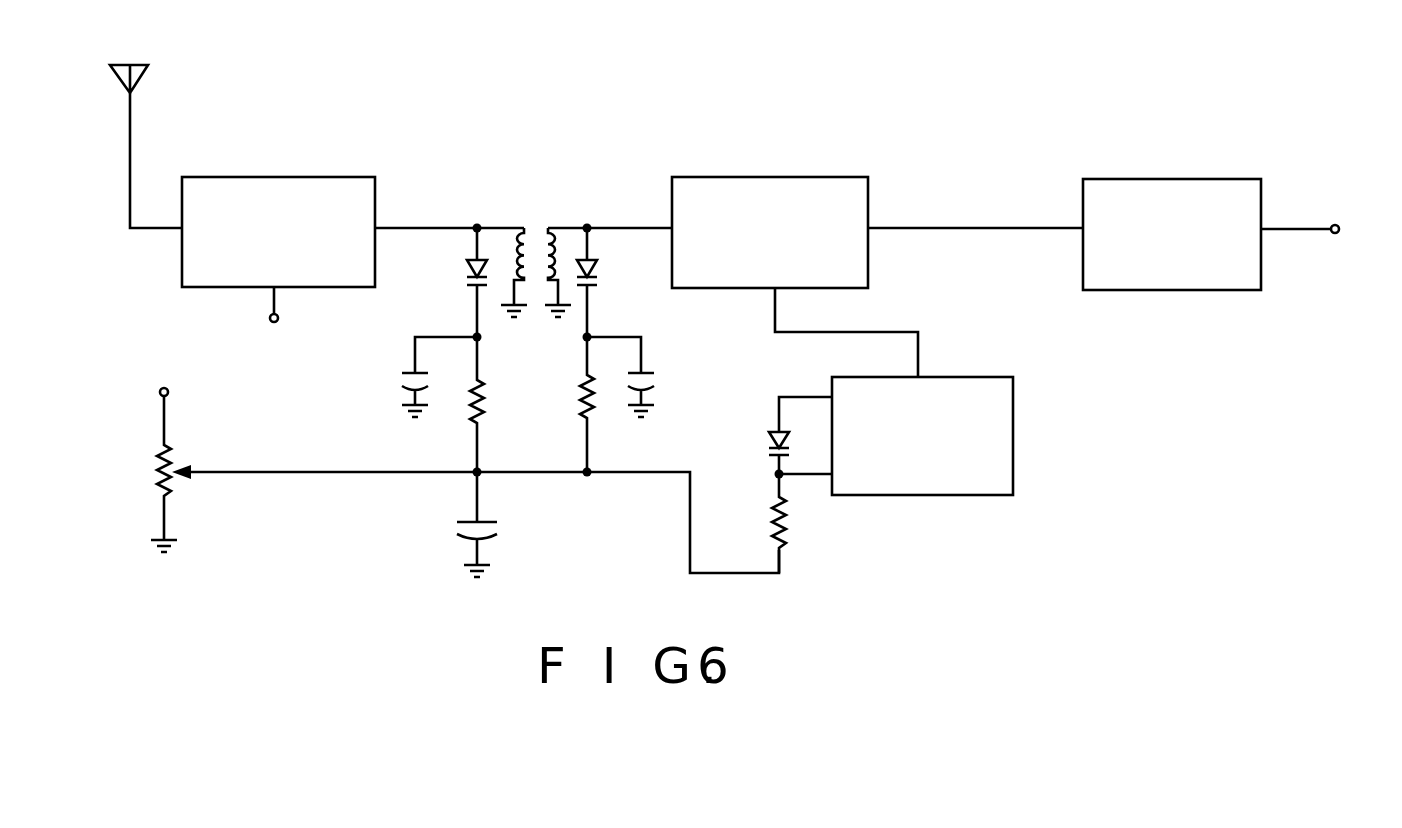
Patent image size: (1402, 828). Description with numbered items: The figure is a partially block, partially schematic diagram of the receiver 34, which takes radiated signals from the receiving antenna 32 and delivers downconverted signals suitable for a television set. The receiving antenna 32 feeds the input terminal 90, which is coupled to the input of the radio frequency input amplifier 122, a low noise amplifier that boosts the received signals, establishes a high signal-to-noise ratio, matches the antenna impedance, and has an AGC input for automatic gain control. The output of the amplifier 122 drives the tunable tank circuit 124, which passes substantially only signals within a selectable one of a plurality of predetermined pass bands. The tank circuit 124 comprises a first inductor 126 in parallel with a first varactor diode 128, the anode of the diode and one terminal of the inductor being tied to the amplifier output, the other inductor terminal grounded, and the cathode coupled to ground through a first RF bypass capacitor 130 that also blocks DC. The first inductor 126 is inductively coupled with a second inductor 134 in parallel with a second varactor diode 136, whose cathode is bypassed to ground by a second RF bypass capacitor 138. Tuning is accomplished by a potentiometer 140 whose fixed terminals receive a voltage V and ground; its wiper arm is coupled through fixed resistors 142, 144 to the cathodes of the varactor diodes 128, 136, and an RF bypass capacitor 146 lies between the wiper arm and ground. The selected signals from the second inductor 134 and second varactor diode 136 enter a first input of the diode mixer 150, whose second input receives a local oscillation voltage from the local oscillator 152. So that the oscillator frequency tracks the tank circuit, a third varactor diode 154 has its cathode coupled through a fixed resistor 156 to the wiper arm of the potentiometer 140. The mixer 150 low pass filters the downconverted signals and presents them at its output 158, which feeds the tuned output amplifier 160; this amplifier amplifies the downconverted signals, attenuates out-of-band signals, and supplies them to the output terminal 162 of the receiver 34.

The receiving antenna 32 is at (130, 106).
The input terminal 90 is at (146, 229).
The radio frequency input amplifier 122 is at (292, 177).
The receiver 34 is at (597, 122).
The tunable tank circuit 124 is at (540, 235).
The first inductor 126 is at (521, 226).
The second inductor 134 is at (560, 227).
The first varactor diode 128 is at (468, 268).
The second varactor diode 136 is at (597, 271).
The first RF bypass capacitor 130 is at (413, 373).
The second RF bypass capacitor 138 is at (652, 374).
The fixed resistor 142 is at (479, 384).
The fixed resistor 144 is at (590, 412).
The RF bypass capacitor 146 is at (486, 522).
The potentiometer 140 is at (160, 462).
The diode mixer 150 is at (756, 177).
The output 158 is at (871, 228).
The tuned output amplifier 160 is at (1130, 180).
The output terminal 162 is at (1335, 225).
The local oscillator 152 is at (1016, 418).
The third varactor diode 154 is at (767, 440).
The fixed resistor 156 is at (783, 517).